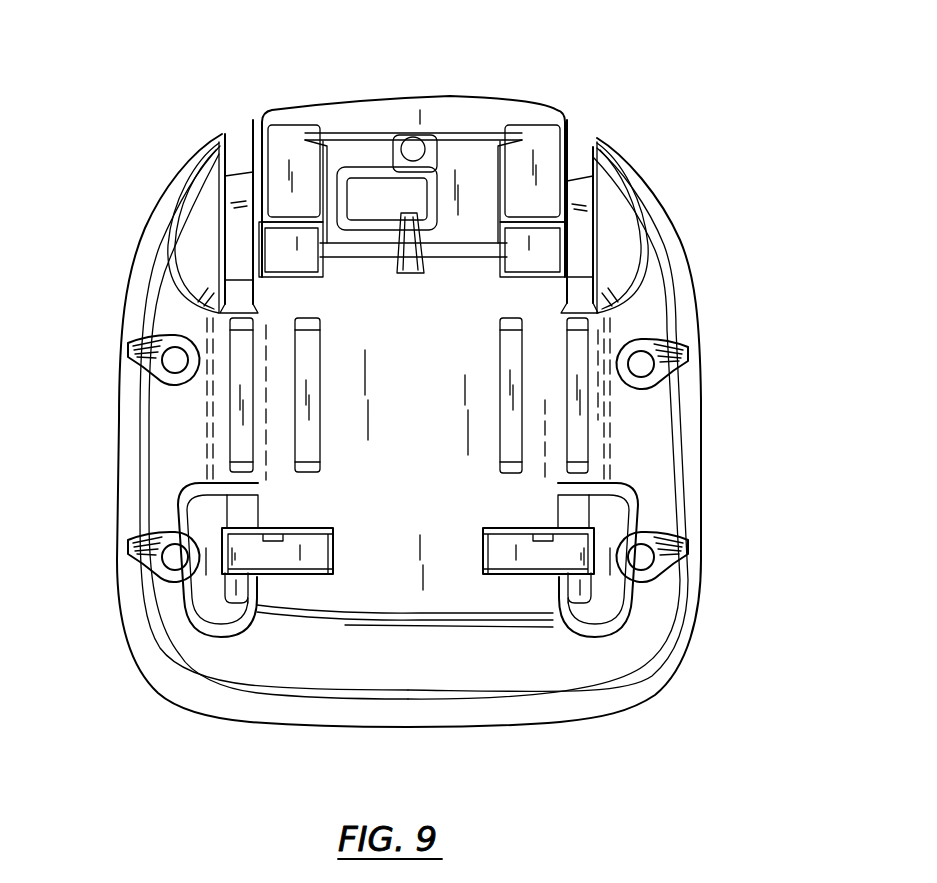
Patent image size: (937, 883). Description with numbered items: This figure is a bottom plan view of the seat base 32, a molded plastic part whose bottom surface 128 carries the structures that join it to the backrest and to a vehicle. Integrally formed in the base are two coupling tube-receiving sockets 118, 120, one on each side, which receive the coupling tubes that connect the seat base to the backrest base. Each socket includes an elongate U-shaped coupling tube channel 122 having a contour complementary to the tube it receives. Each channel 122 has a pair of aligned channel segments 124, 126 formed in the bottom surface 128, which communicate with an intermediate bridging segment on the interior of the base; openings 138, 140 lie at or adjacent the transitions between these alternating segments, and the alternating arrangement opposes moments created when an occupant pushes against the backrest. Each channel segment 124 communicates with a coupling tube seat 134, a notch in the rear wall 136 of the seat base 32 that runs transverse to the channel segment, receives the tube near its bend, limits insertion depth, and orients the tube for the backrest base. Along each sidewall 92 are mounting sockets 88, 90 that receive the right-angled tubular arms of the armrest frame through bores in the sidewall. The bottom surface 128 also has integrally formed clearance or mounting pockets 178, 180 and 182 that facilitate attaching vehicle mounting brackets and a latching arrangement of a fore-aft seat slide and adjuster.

The seat base 32 is at (608, 736).
The mounting socket 88 is at (100, 356).
The mounting socket 90 is at (102, 568).
The sidewall 92 is at (673, 290).
The coupling tube-receiving socket 118 is at (238, 116).
The coupling tube-receiving socket 120 is at (597, 105).
The coupling tube channel 122 is at (246, 145).
The channel segment 124 is at (242, 225).
The channel segment 126 is at (245, 593).
The bottom surface 128 is at (537, 137).
The coupling tube seat 134 is at (234, 156).
The rear wall 136 is at (325, 113).
The opening 138 is at (240, 292).
The opening 140 is at (240, 513).
The mounting pocket 178 is at (293, 560).
The mounting pocket 180 is at (543, 560).
The mounting pocket 182 is at (452, 126).